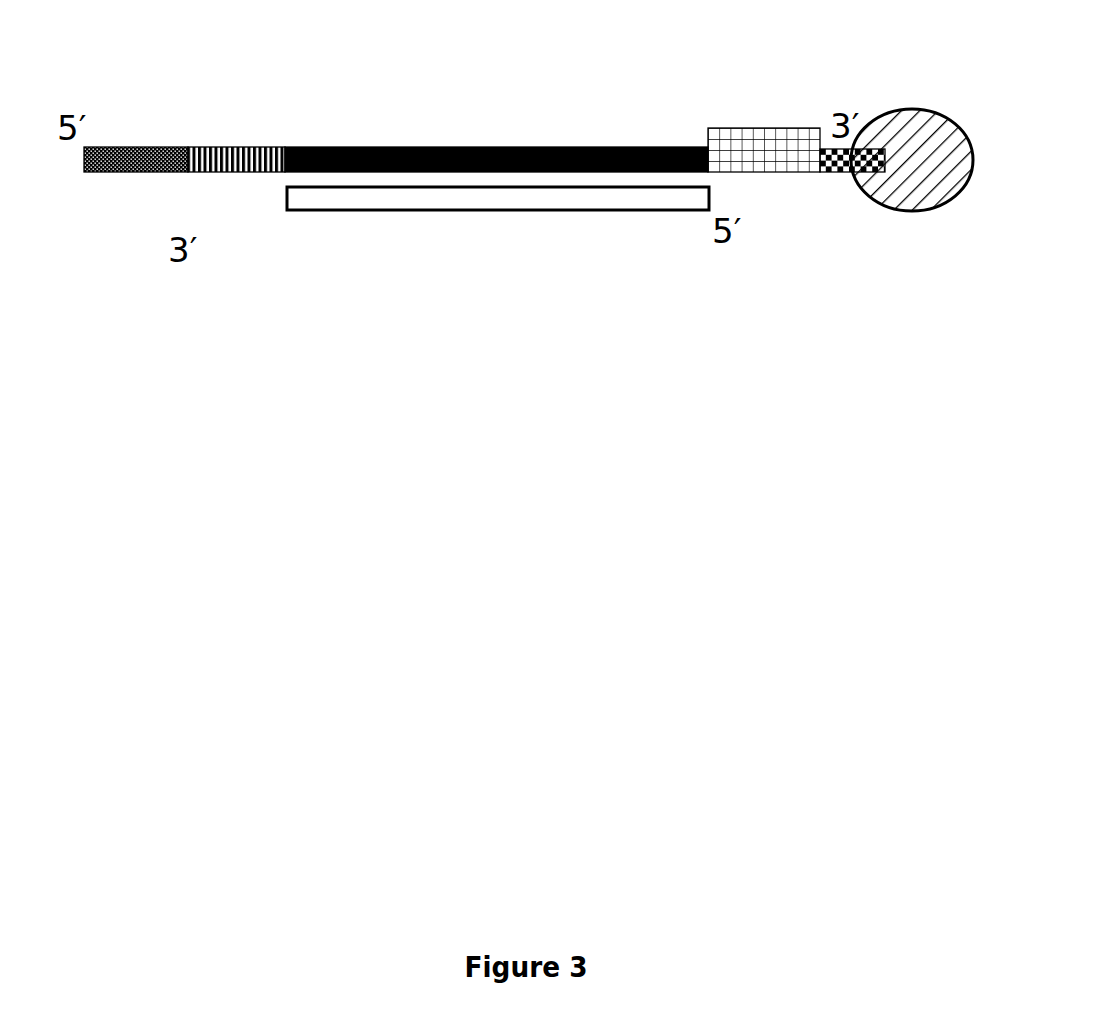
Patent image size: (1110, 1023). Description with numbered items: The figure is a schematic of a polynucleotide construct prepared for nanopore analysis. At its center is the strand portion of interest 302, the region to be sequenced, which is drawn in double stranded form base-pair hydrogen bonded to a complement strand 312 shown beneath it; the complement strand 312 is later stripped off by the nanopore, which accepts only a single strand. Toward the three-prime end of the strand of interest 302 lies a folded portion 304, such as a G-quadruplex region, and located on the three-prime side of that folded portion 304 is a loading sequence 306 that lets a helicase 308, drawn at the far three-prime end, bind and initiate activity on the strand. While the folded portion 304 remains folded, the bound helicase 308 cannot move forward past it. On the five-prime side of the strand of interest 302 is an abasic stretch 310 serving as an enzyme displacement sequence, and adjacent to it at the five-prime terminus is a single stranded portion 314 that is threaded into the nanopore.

The strand portion of interest 302 is at (436, 137).
The folded portion 304 is at (764, 119).
The loading sequence 306 is at (839, 183).
The helicase 308 is at (933, 100).
The abasic stretch 310 is at (246, 137).
The complement strand 312 is at (404, 221).
The single stranded portion 314 is at (151, 137).